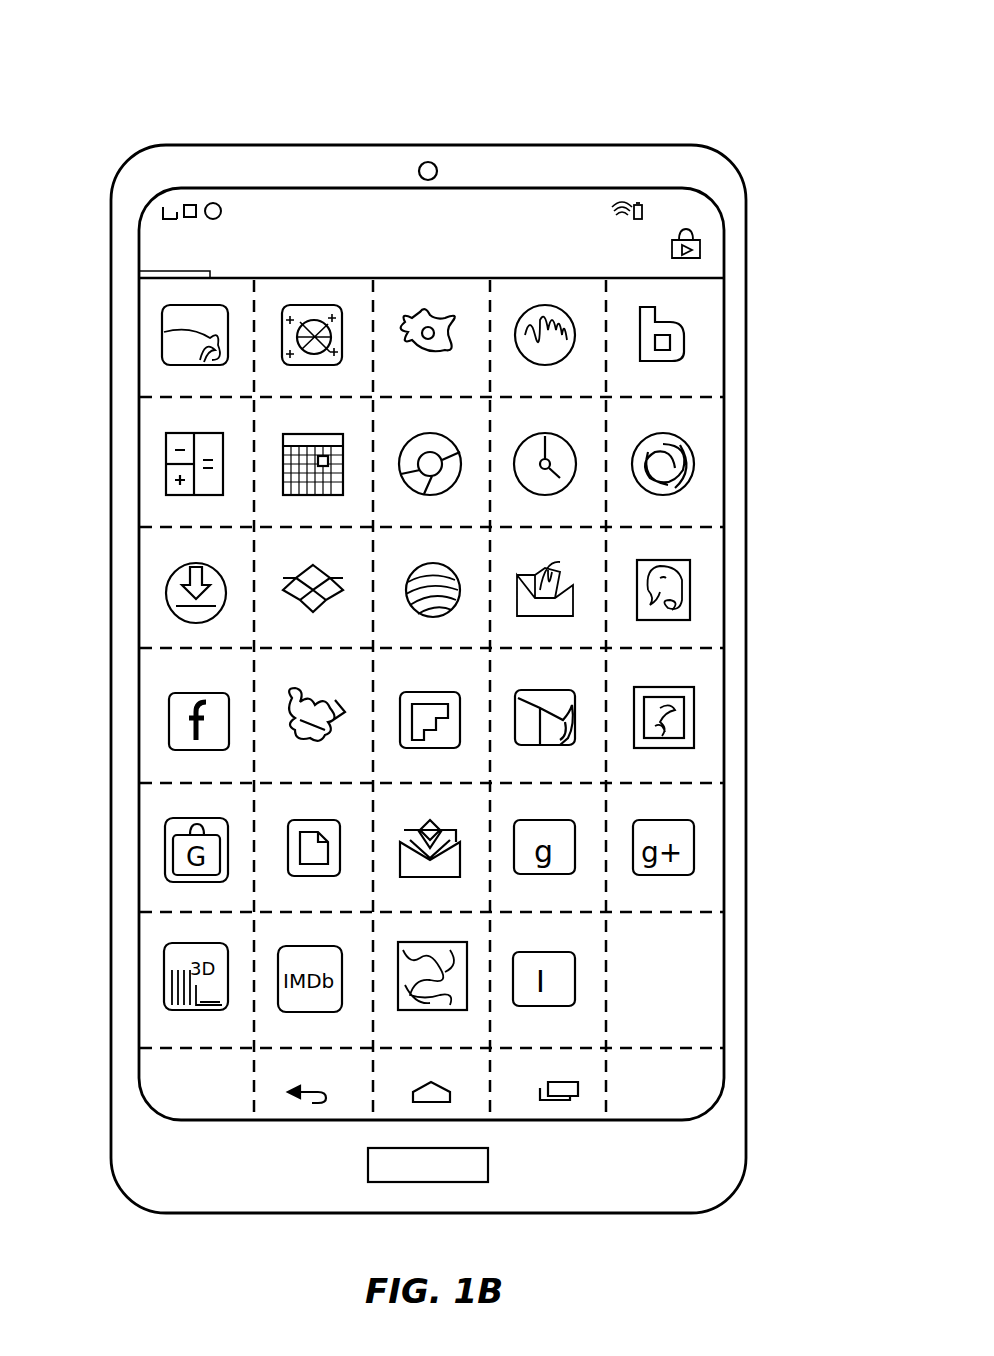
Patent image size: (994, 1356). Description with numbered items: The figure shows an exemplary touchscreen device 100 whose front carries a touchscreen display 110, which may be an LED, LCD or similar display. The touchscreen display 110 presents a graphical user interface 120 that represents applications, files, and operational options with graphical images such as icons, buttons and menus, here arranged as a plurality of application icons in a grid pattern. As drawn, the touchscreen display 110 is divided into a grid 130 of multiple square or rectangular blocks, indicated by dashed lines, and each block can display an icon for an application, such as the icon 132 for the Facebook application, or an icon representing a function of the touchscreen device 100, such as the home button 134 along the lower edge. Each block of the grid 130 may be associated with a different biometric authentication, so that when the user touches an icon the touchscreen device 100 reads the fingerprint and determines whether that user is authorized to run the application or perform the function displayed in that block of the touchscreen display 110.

The touchscreen device 100 is at (428, 608).
The touchscreen display 110 is at (727, 700).
The graphical user interface 120 is at (688, 1041).
The grid 130 is at (680, 397).
The icon 132 is at (168, 720).
The home button 134 is at (448, 1087).